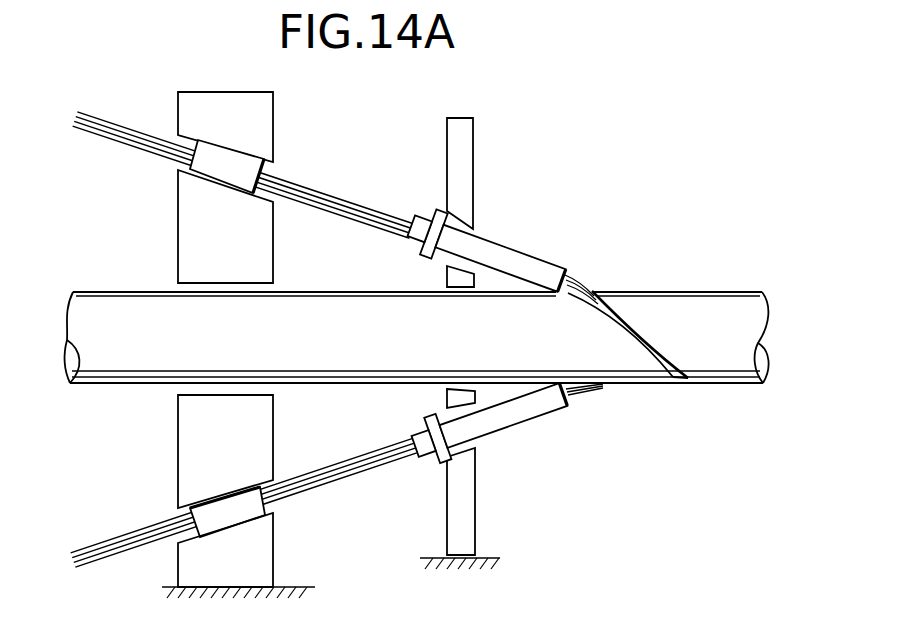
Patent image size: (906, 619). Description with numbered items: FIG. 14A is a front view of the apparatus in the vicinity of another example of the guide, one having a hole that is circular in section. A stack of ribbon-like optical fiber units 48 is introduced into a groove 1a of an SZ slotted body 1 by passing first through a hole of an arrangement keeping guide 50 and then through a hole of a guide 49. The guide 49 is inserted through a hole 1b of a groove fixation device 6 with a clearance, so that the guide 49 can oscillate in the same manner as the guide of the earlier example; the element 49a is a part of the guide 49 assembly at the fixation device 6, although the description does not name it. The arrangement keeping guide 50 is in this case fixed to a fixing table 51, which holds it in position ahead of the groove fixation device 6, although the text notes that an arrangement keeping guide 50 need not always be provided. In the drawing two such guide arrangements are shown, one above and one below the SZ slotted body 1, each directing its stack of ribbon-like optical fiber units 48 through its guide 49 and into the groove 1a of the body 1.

The SZ slotted body 1 is at (740, 360).
The groove 1a is at (687, 378).
The hole 1b is at (463, 442).
The groove fixation device 6 is at (470, 507).
The ribbon-like optical fiber unit 48 is at (344, 199).
The guide 49 is at (523, 253).
The connector fitting 49a is at (424, 457).
The arrangement keeping guide 50 is at (240, 160).
The fixing table 51 is at (270, 543).